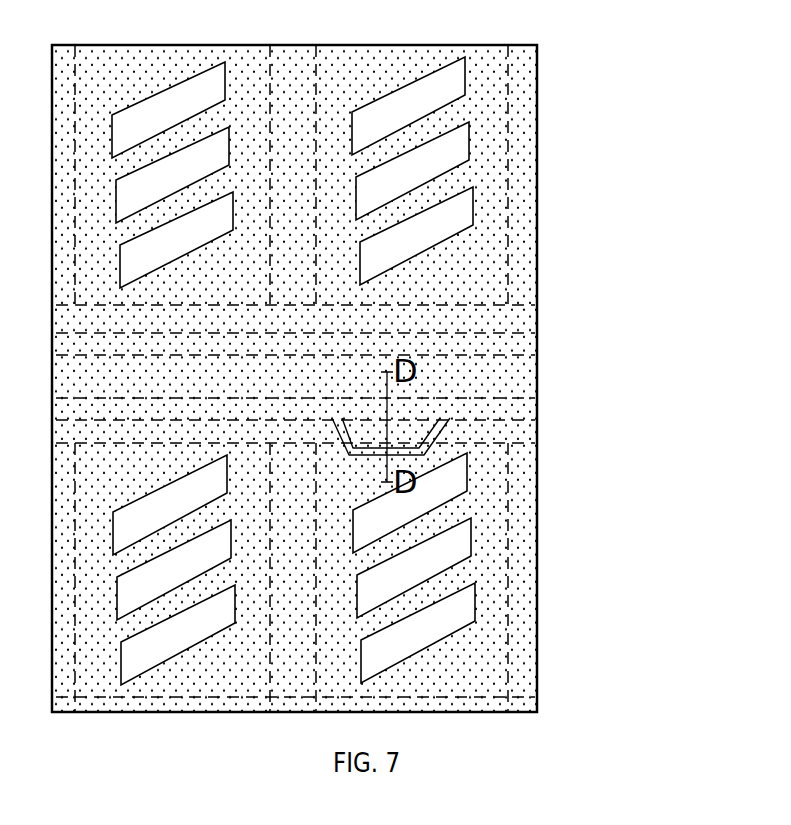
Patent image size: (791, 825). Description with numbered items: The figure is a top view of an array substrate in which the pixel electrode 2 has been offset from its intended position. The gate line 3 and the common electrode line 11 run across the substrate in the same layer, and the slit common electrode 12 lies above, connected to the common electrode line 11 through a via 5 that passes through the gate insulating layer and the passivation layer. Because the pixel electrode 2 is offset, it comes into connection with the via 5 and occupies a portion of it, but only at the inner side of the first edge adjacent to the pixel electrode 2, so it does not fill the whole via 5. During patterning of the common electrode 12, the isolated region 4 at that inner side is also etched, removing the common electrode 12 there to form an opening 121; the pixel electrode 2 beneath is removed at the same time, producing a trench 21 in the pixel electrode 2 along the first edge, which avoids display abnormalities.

The pixel electrode 2 is at (510, 207).
The common electrode 12 is at (523, 68).
The gate line 3 is at (522, 338).
The common electrode line 11 is at (522, 403).
The isolated region 4 is at (295, 441).
The opening 121 is at (295, 557).
The trench 21 is at (337, 446).
The via 5 is at (443, 418).